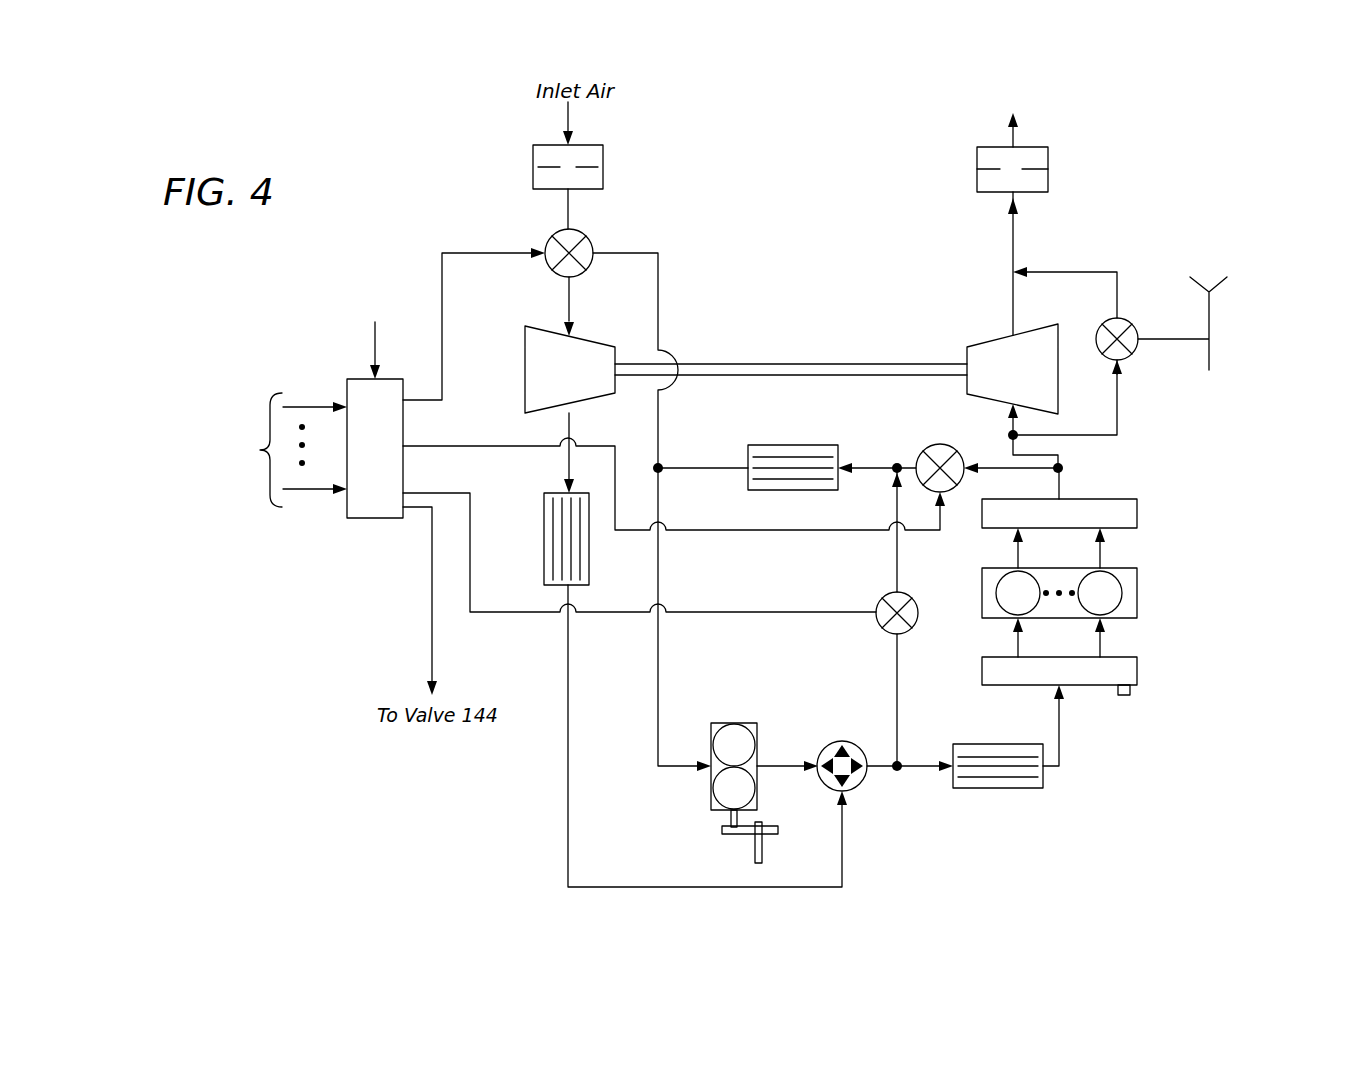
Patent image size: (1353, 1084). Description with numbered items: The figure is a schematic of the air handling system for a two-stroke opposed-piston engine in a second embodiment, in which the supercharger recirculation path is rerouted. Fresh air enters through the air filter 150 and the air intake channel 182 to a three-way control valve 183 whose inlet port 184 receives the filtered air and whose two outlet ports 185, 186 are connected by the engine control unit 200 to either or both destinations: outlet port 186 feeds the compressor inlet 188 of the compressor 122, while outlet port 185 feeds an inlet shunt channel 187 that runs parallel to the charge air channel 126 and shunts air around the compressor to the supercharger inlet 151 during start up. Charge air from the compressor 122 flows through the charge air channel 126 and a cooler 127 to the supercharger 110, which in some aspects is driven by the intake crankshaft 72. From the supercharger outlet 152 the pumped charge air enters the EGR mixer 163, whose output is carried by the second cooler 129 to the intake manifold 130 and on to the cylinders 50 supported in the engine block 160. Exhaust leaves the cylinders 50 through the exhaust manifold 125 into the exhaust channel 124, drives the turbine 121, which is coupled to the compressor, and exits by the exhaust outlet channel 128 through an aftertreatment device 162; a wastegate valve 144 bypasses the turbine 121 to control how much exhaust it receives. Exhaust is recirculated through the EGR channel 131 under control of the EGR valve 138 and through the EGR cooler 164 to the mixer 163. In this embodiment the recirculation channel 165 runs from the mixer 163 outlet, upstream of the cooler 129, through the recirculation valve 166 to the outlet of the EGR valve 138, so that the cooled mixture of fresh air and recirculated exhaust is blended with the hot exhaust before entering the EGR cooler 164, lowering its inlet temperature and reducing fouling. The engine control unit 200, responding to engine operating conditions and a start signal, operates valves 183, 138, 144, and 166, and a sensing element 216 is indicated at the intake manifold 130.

The cylinder 50 is at (996, 590).
The intake crankshaft 72 is at (748, 835).
The supercharger 110 is at (757, 740).
The turbine 121 is at (980, 347).
The compressor 122 is at (525, 354).
The exhaust channel 124 is at (1013, 455).
The exhaust manifold 125 is at (1137, 512).
The charge air channel 126 is at (497, 408).
The cooler 127 is at (544, 543).
The exhaust outlet channel 128 is at (930, 205).
The second cooler 129 is at (1027, 788).
The intake manifold 130 is at (1137, 670).
The EGR channel 131 is at (858, 428).
The EGR valve 138 is at (940, 444).
The wastegate valve 144 is at (1125, 358).
The air filter 150 is at (603, 159).
The supercharger inlet 151 is at (672, 766).
The supercharger outlet 152 is at (773, 766).
The engine block 160 is at (1137, 607).
The aftertreatment device 162 is at (1048, 170).
The EGR mixer 163 is at (858, 785).
The EGR cooler 164 is at (790, 490).
The recirculation channel 165 is at (850, 600).
The recirculation valve 166 is at (885, 628).
The air intake channel 182 is at (497, 192).
The control valve 183 is at (590, 242).
The inlet port 184 is at (568, 212).
The outlet port 185 is at (628, 253).
The outlet port 186 is at (569, 296).
The inlet shunt channel 187 is at (700, 316).
The compressor inlet 188 is at (569, 338).
The engine control unit 200 is at (375, 518).
The intake manifold sensor 216 is at (1124, 696).